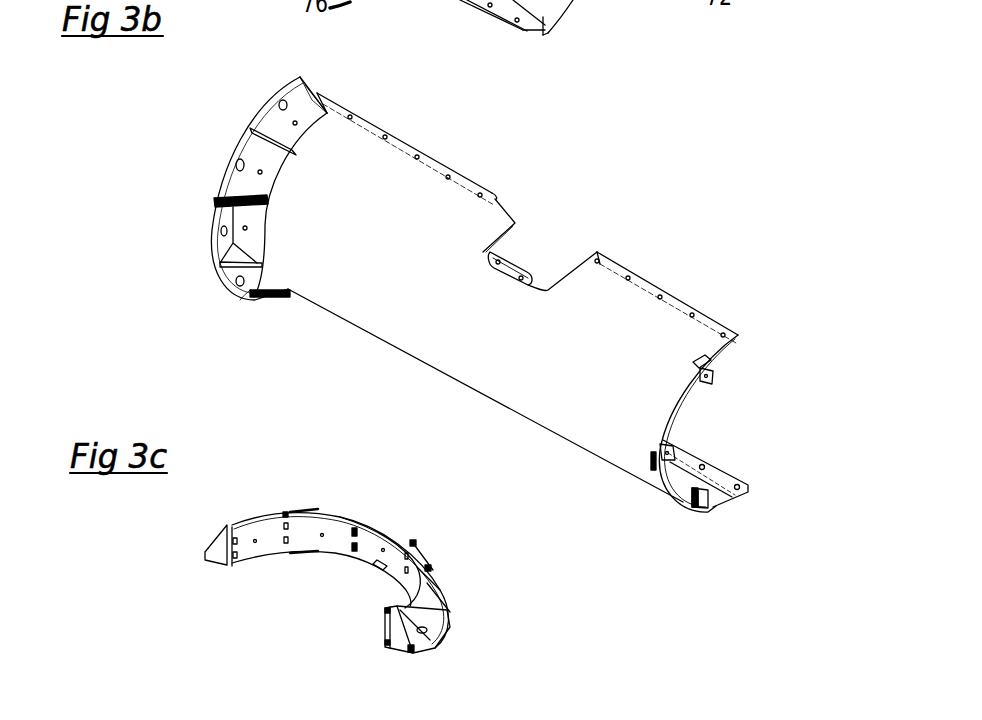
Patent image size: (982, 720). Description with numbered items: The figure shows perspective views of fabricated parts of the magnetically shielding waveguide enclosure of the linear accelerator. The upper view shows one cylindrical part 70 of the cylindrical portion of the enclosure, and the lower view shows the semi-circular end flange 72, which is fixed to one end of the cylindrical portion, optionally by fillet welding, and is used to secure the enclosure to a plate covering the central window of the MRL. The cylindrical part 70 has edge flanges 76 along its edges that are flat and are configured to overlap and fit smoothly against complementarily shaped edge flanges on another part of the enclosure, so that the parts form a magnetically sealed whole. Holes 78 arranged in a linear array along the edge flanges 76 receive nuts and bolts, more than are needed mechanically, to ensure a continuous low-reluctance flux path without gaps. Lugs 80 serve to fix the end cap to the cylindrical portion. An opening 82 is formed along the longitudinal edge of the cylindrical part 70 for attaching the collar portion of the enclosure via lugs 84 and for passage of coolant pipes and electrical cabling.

In FIG. 3B, the cylindrical part 70 is at (570, 212).
In FIG. 3B, the end flange 72 is at (214, 219).
In FIG. 3C, the end flange 72 is at (440, 587).
In FIG. 3B, the edge flanges 76 is at (433, 167).
In FIG. 3B, the holes 78 is at (637, 279).
In FIG. 3C, the holes 78 is at (356, 533).
In FIG. 3B, the lugs 80 is at (675, 448).
In FIG. 3B, the opening 82 is at (538, 244).
In FIG. 3B, the lugs 84 is at (503, 275).